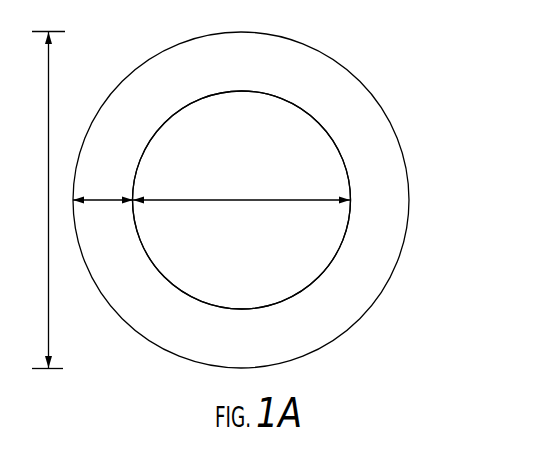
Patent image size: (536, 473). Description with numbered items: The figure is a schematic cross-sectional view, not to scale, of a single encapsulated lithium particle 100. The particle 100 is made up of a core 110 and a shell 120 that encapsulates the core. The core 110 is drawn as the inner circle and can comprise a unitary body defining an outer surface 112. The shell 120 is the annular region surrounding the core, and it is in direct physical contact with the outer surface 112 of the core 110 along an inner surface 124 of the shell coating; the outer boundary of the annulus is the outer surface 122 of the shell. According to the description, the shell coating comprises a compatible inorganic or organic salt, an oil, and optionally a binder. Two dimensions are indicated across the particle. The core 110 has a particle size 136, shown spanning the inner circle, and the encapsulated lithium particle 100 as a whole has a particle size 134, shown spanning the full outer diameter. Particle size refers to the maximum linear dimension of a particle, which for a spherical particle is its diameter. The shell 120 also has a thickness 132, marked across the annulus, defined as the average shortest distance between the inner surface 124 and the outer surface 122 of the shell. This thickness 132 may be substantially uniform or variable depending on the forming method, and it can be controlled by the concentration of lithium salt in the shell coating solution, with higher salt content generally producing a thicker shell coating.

The encapsulated lithium particle 100 is at (430, 126).
The core 110 is at (253, 139).
The outer surface of the core 112 is at (185, 292).
The shell 120 is at (253, 354).
The outer surface of the shell 122 is at (383, 290).
The inner surface of the shell 124 is at (337, 249).
The thickness 132 is at (103, 188).
The particle size 134 is at (38, 200).
The particle size 136 is at (241, 188).